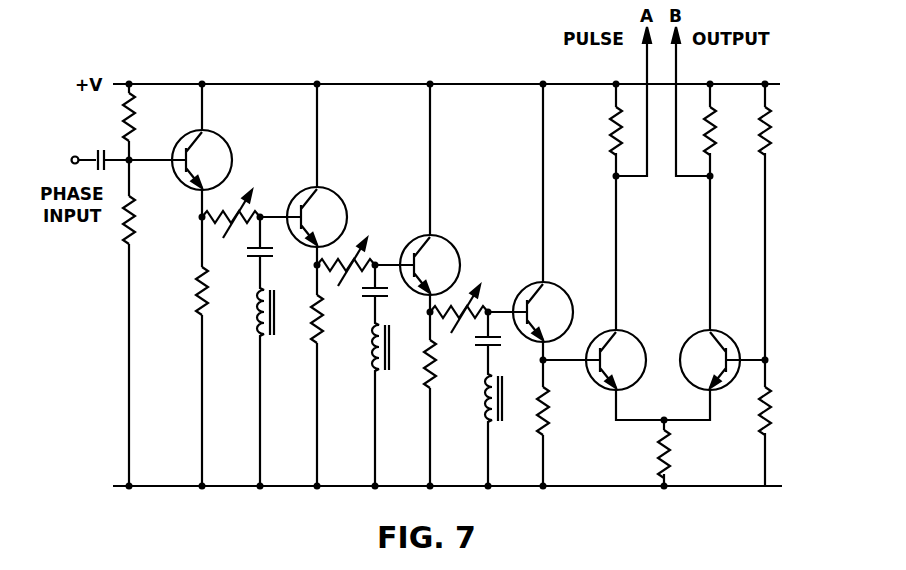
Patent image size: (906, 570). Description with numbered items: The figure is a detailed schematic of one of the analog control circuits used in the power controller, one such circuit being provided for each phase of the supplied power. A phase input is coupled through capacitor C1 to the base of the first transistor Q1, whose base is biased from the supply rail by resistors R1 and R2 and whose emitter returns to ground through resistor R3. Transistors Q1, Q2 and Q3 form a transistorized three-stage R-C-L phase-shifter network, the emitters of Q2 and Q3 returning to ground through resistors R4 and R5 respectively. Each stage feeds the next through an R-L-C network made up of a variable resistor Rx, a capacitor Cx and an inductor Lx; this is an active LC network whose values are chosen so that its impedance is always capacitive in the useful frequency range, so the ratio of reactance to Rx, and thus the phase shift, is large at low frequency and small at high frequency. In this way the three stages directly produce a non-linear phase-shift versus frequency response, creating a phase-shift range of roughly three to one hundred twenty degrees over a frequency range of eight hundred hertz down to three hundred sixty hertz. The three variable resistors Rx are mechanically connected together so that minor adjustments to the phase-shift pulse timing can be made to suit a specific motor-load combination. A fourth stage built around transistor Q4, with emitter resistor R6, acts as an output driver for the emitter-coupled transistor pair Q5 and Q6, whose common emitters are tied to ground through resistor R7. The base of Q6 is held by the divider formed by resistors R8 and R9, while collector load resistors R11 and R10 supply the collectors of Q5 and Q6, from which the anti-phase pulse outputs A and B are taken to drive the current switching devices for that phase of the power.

The input coupling capacitor C1 is at (101, 148).
The bias resistor R1 is at (143, 122).
The bias resistor R2 is at (143, 202).
The emitter resistor R3 is at (188, 266).
The emitter resistor R4 is at (330, 304).
The emitter resistor R5 is at (443, 350).
The emitter resistor R6 is at (557, 397).
The common emitter resistor R7 is at (678, 449).
The bias resistor R8 is at (779, 222).
The bias resistor R9 is at (780, 397).
The collector load resistor R10 is at (728, 130).
The collector load resistor R11 is at (595, 130).
The variable resistor Rx is at (345, 261).
The capacitor Cx is at (387, 294).
The inductor Lx is at (387, 368).
The transistor Q1 is at (213, 137).
The transistor Q2 is at (328, 165).
The transistor Q3 is at (439, 189).
The transistor Q4 is at (553, 213).
The output transistor Q5 is at (617, 283).
The output transistor Q6 is at (708, 283).